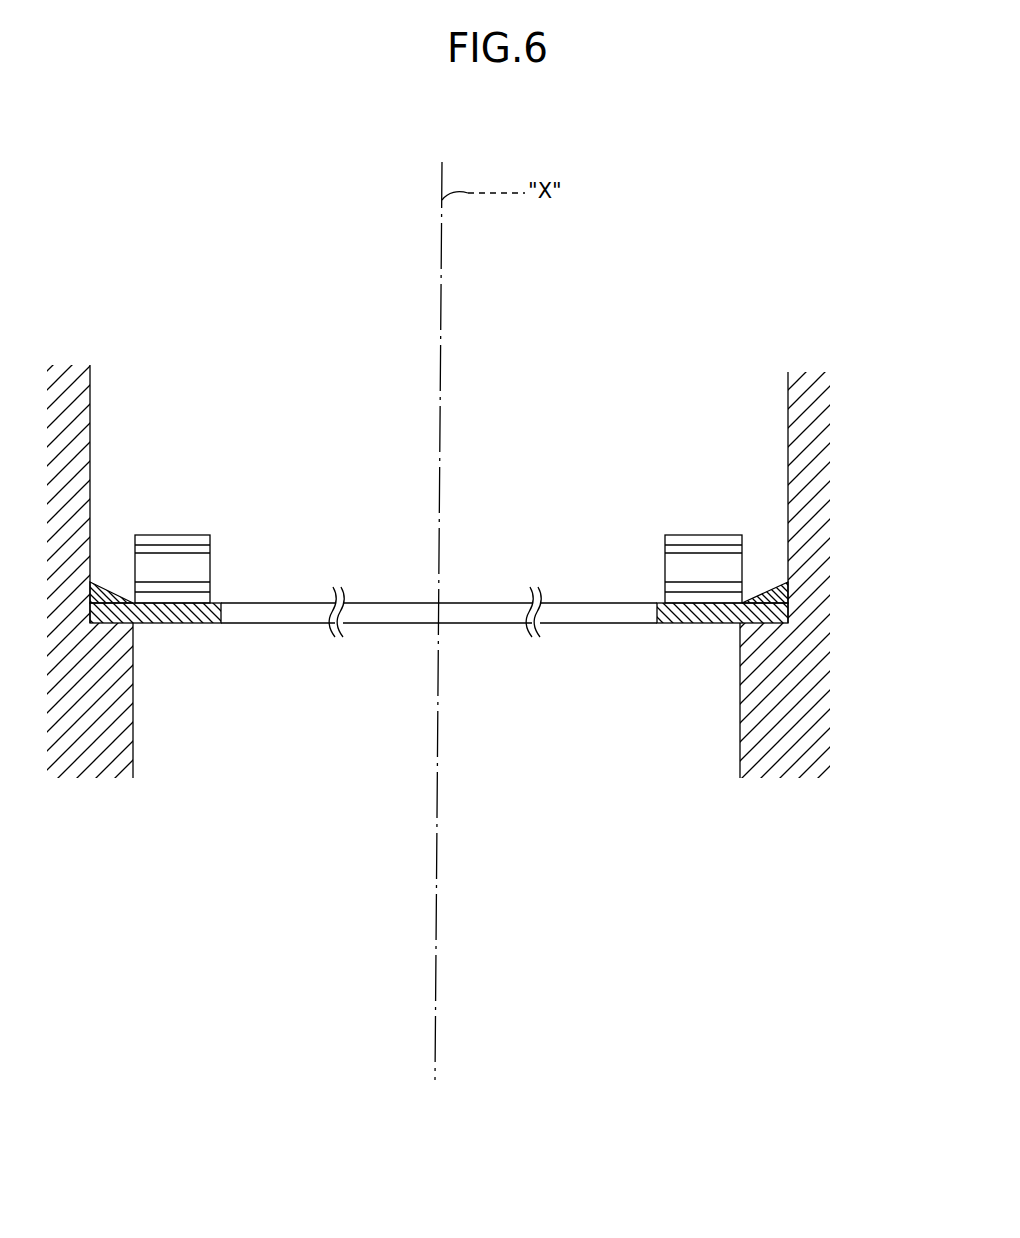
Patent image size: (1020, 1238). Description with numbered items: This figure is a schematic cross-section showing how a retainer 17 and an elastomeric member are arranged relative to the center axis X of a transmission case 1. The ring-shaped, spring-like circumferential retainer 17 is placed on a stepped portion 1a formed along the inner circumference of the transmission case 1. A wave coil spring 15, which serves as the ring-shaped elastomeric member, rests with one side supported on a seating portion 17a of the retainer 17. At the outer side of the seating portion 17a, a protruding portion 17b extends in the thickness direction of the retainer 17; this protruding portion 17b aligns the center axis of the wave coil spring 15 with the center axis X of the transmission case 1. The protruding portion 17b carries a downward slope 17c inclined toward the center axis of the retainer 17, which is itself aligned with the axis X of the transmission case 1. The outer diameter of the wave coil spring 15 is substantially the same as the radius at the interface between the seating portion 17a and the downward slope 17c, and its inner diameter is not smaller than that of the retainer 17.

The transmission case 1 is at (812, 452).
The stepped portion 1a is at (742, 600).
The wave coil spring 15 is at (662, 528).
The retainer 17 is at (439, 693).
The seating portion 17a is at (680, 624).
The protruding portion 17b is at (738, 627).
The downward slope 17c is at (715, 624).